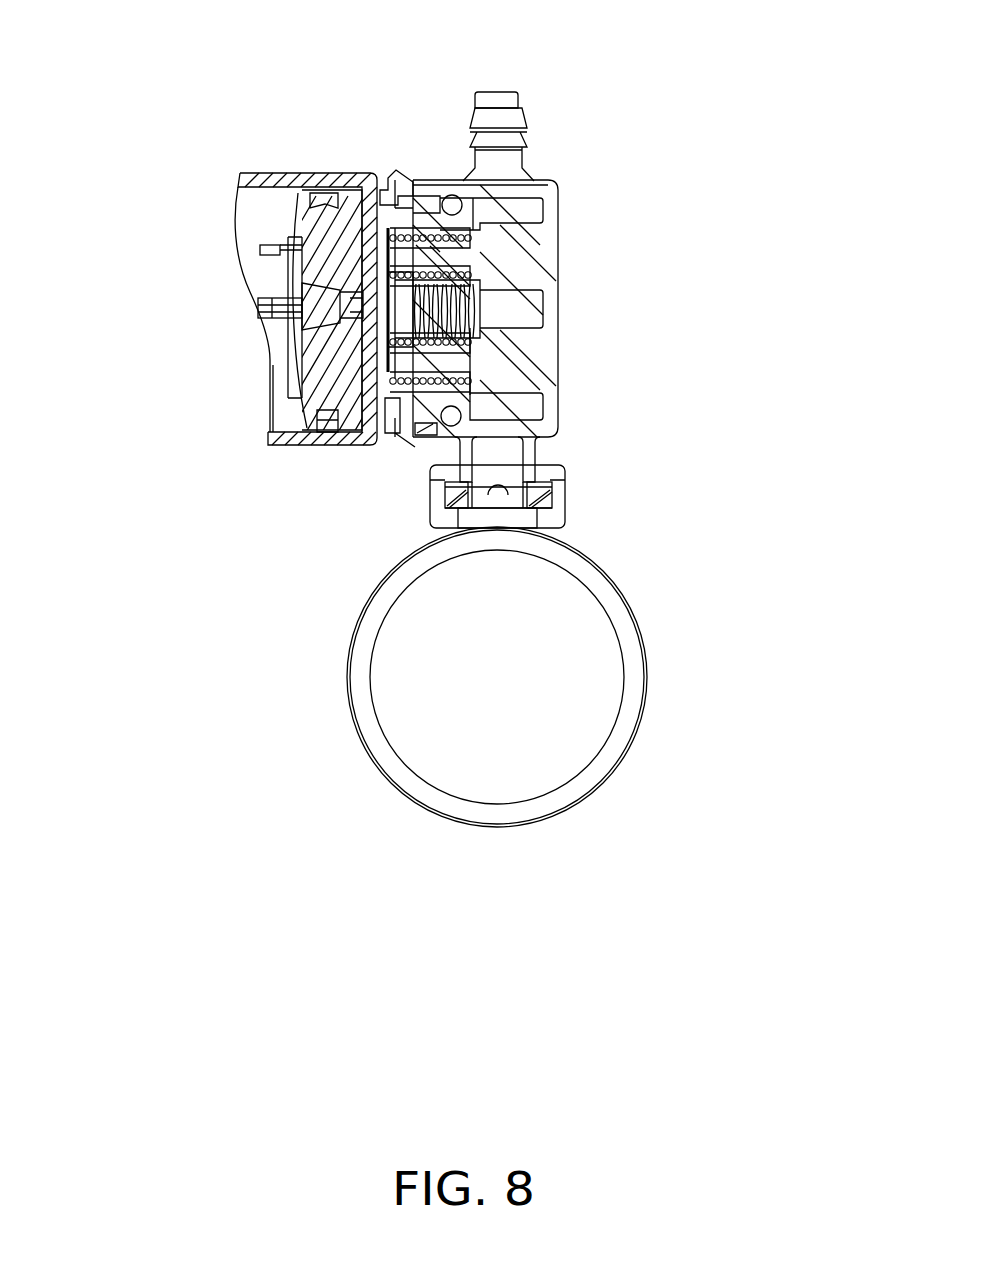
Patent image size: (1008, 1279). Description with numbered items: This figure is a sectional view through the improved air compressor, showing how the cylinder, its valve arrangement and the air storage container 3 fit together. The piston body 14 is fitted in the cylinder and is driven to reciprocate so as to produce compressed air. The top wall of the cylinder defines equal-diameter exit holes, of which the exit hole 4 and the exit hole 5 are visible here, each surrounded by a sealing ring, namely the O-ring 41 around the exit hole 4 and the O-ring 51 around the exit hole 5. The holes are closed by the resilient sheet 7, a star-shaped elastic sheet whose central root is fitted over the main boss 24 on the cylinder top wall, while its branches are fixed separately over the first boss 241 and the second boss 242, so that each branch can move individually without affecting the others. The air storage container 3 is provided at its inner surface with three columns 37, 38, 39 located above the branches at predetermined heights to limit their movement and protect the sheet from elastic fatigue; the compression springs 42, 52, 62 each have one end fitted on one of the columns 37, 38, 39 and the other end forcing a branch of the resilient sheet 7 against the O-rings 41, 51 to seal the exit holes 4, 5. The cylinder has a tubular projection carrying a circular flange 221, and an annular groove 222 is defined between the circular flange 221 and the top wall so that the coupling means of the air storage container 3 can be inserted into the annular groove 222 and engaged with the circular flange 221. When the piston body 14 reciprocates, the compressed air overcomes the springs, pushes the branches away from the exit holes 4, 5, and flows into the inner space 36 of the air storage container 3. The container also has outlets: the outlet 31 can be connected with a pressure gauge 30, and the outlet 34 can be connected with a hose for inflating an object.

The air storage container 3 is at (552, 193).
The pressure gauge 30 is at (573, 647).
The outlet 31 is at (520, 453).
The outlet 34 is at (510, 132).
The inner space 36 is at (490, 213).
The column 37 is at (488, 258).
The column 38 is at (500, 355).
The column 39 is at (557, 308).
The exit hole 4 is at (267, 200).
The O-ring 41 is at (345, 232).
The compression spring 42 is at (420, 205).
The exit hole 5 is at (360, 363).
The O-ring 51 is at (337, 420).
The compression spring 52 is at (420, 430).
The compression spring 62 is at (515, 308).
The resilient sheet 7 is at (390, 202).
The piston body 14 is at (282, 347).
The main boss 24 is at (312, 343).
The first boss 241 is at (375, 262).
The second boss 242 is at (283, 438).
The circular flange 221 is at (424, 190).
The annular groove 222 is at (413, 195).